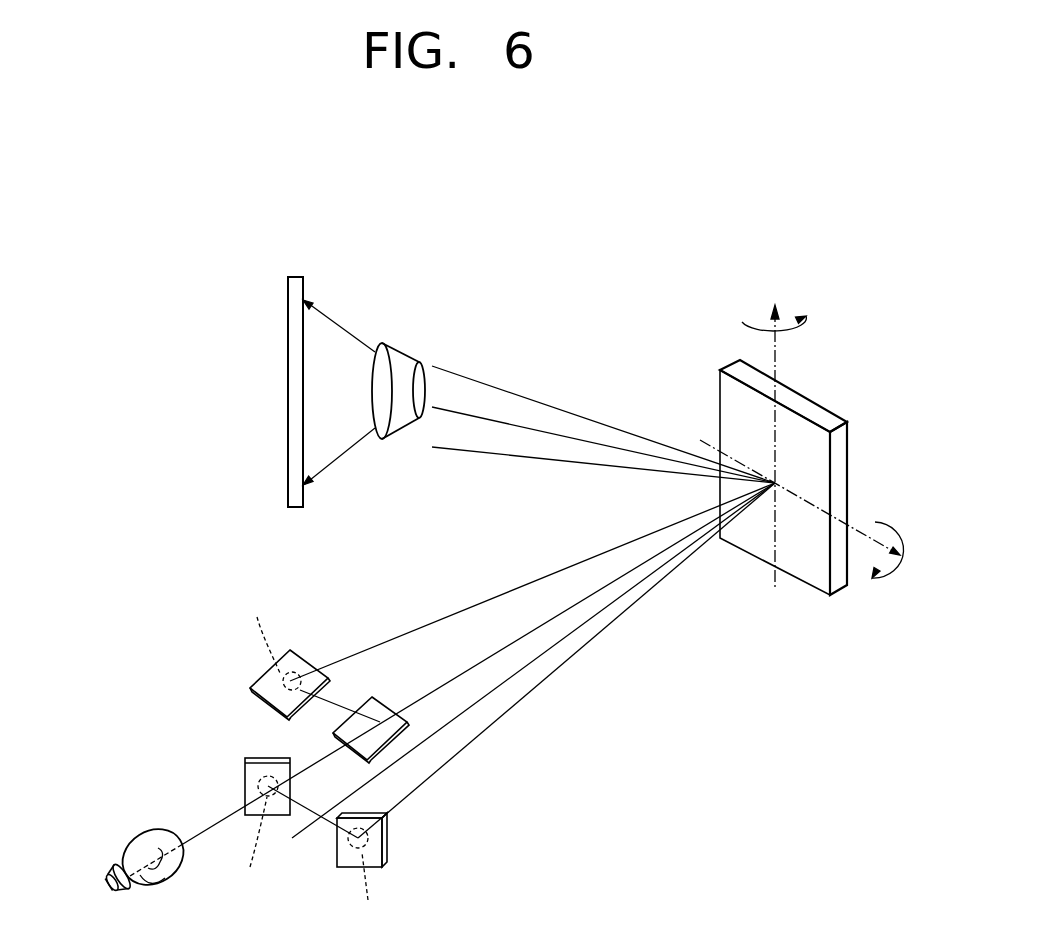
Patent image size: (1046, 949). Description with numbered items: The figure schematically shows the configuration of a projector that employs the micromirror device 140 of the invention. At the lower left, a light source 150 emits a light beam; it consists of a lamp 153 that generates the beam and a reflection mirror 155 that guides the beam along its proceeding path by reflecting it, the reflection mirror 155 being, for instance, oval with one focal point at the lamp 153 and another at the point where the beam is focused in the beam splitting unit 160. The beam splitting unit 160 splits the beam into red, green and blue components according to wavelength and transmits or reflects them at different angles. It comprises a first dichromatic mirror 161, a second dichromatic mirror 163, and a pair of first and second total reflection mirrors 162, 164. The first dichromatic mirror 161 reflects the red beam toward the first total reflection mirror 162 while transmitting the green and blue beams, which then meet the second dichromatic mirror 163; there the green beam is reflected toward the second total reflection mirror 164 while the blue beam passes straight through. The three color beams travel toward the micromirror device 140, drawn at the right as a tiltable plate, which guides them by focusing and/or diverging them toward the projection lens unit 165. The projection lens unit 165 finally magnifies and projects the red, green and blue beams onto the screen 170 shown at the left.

The micromirror device 140 is at (828, 372).
The light source 150 is at (113, 887).
The lamp 153 is at (170, 882).
The reflection mirror 155 is at (142, 830).
The beam splitting unit 160 is at (230, 670).
The first dichromatic mirror 161 is at (245, 763).
The first total reflection mirror 162 is at (387, 838).
The second dichromatic mirror 163 is at (388, 700).
The second total reflection mirror 164 is at (307, 653).
The projection lens unit 165 is at (392, 347).
The screen 170 is at (288, 301).